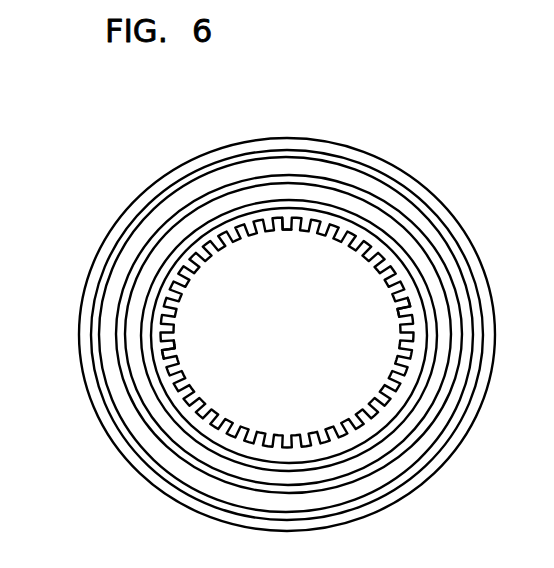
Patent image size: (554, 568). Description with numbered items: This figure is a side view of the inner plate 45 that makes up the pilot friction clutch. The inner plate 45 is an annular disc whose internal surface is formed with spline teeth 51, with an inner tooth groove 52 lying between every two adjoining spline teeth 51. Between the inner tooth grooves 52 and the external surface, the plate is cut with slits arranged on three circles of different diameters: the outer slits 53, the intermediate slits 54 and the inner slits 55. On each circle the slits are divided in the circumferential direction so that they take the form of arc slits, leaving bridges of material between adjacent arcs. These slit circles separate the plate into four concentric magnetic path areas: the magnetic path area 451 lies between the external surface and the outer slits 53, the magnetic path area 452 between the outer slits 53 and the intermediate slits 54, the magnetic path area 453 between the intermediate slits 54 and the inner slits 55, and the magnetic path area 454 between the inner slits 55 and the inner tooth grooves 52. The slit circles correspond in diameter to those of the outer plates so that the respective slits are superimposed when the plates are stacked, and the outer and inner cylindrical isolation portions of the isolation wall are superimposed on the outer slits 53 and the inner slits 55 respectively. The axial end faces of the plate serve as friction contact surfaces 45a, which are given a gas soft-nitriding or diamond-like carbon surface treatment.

The inner plate 45 is at (365, 151).
The friction contact surfaces 45a is at (379, 483).
The magnetic path area 451 is at (214, 154).
The magnetic path area 452 is at (187, 192).
The magnetic path area 453 is at (142, 273).
The magnetic path area 454 is at (172, 354).
The spline teeth 51 is at (288, 231).
The inner tooth grooves 52 is at (300, 226).
The outer slits 53 is at (392, 166).
The intermediate slits 54 is at (412, 210).
The inner slits 55 is at (405, 305).